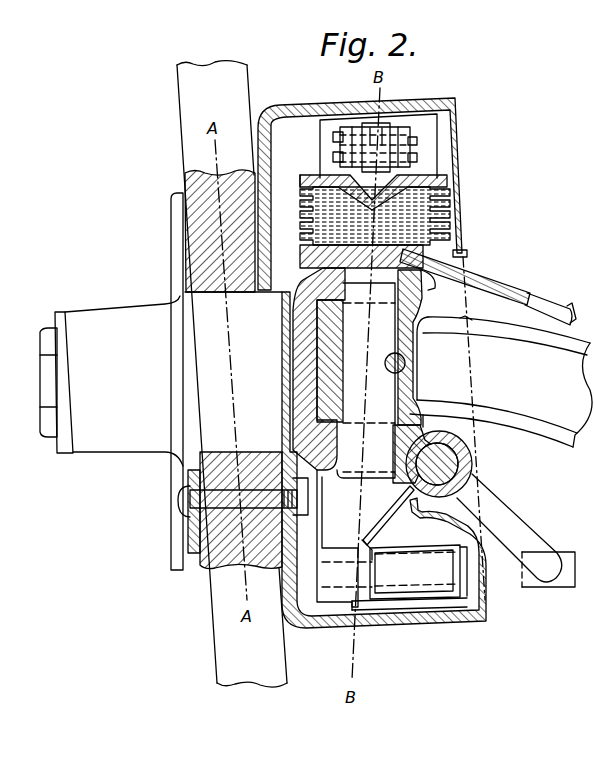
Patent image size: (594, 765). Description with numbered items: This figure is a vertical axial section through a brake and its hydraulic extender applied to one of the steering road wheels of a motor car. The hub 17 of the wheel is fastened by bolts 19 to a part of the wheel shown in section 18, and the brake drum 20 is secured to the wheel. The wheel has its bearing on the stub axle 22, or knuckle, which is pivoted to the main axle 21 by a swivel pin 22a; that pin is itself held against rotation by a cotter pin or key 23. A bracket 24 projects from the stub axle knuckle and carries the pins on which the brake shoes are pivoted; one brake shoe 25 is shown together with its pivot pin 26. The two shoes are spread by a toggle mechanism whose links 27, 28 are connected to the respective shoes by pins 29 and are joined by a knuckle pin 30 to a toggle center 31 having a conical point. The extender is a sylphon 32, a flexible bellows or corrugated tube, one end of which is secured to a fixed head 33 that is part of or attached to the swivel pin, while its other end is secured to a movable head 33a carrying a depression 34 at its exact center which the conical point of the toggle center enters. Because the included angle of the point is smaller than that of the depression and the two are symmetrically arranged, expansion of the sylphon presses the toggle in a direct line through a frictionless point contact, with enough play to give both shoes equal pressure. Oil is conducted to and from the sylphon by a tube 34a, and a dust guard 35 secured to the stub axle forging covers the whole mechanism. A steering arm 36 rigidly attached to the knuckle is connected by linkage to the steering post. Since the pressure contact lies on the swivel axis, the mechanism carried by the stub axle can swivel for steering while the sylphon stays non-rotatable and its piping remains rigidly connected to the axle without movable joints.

The hub 17 is at (110, 445).
The wheel section 18 is at (213, 560).
The bolts 19 is at (178, 507).
The brake drum 20 is at (340, 628).
The main axle 21 is at (540, 417).
The stub axle 22 is at (288, 335).
The pin 22a is at (380, 335).
The cotter pin 23 is at (402, 366).
The bracket 24 is at (372, 507).
The brake shoe 25 is at (425, 604).
The pivot pin 26 is at (458, 572).
The link 27 is at (382, 127).
The link 28 is at (410, 131).
The pins 29 is at (417, 141).
The knuckle pin 30 is at (414, 162).
The toggle center 31 is at (448, 205).
The sylphon 32 is at (311, 174).
The fixed head 33 is at (292, 270).
The movable head 33a is at (453, 180).
The depression 34 is at (447, 227).
The tube 34a is at (555, 308).
The dust guard 35 is at (467, 253).
The steering arm 36 is at (515, 522).